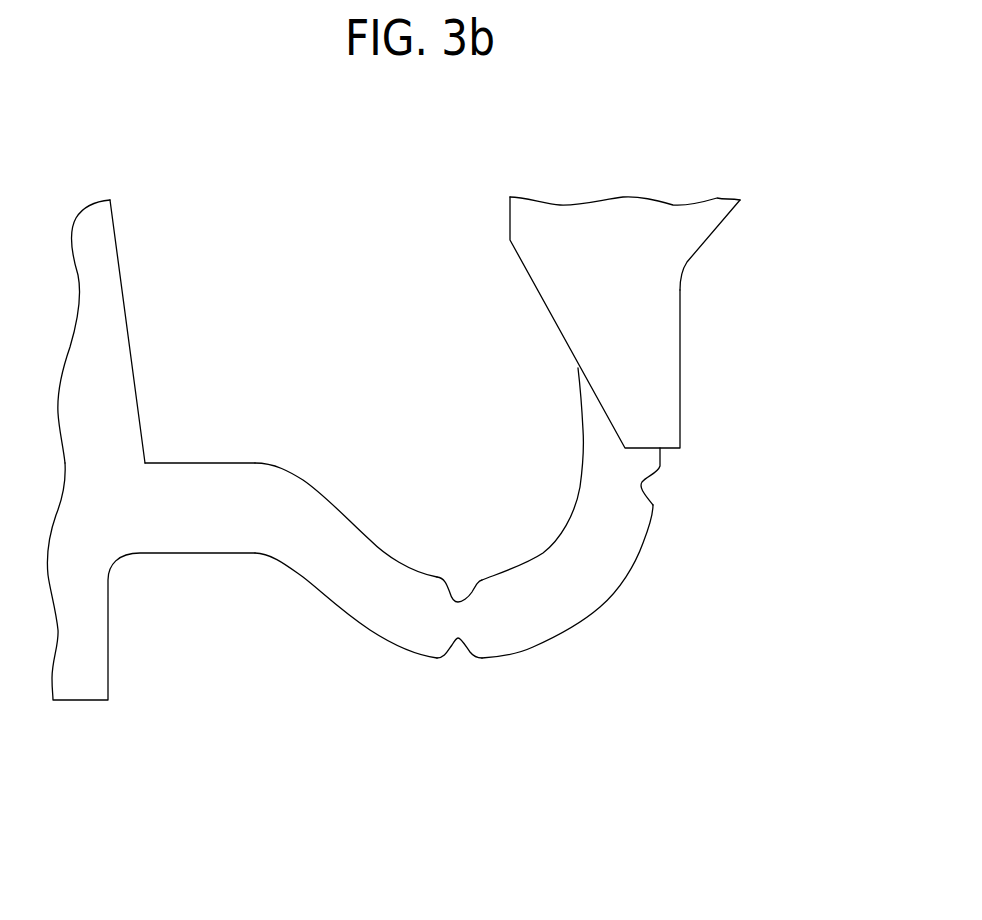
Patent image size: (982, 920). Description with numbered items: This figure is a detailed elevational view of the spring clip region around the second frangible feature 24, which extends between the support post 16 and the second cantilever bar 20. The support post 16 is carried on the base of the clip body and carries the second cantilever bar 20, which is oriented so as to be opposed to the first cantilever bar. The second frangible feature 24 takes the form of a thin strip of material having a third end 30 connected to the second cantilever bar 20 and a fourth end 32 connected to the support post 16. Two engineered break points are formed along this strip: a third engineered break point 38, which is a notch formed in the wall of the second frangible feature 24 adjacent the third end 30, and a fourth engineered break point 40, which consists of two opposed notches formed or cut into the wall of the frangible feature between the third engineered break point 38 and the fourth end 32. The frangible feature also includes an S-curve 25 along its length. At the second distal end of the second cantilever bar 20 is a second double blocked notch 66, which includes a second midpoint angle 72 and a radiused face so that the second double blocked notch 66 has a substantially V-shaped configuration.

The support post 16 is at (107, 303).
The fourth end 32 is at (155, 463).
The second frangible feature 24 is at (352, 532).
The fourth engineered break point 40 is at (458, 602).
The third end 30 is at (593, 430).
The second cantilever bar 20 is at (630, 317).
The second midpoint angle 72 is at (687, 262).
The second double blocked notch 66 is at (735, 305).
The third engineered break point 38 is at (642, 485).
The S-curve 25 is at (331, 672).